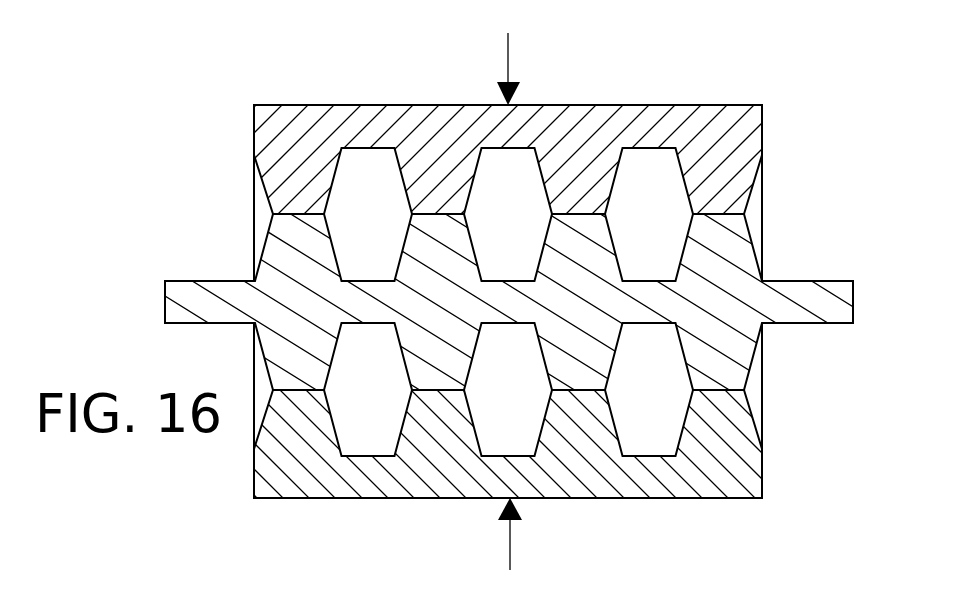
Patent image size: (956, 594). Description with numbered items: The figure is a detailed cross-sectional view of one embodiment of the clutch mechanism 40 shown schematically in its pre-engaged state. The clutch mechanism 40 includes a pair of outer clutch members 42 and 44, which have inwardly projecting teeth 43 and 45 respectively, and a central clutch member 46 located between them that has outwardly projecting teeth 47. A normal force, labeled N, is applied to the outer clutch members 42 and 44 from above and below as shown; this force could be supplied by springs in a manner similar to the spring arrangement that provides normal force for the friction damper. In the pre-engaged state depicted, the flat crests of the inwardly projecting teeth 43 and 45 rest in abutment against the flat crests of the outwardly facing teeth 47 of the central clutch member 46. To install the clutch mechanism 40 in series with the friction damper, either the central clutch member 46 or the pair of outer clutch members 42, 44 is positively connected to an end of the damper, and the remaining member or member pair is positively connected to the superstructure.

The clutch mechanism 40 is at (150, 152).
The outer clutch member 42 is at (353, 498).
The inwardly projecting teeth 43 is at (435, 390).
The outer clutch member 44 is at (368, 105).
The inwardly projecting teeth 45 is at (717, 215).
The central clutch member 46 is at (222, 280).
The outwardly projecting teeth 47 is at (442, 213).